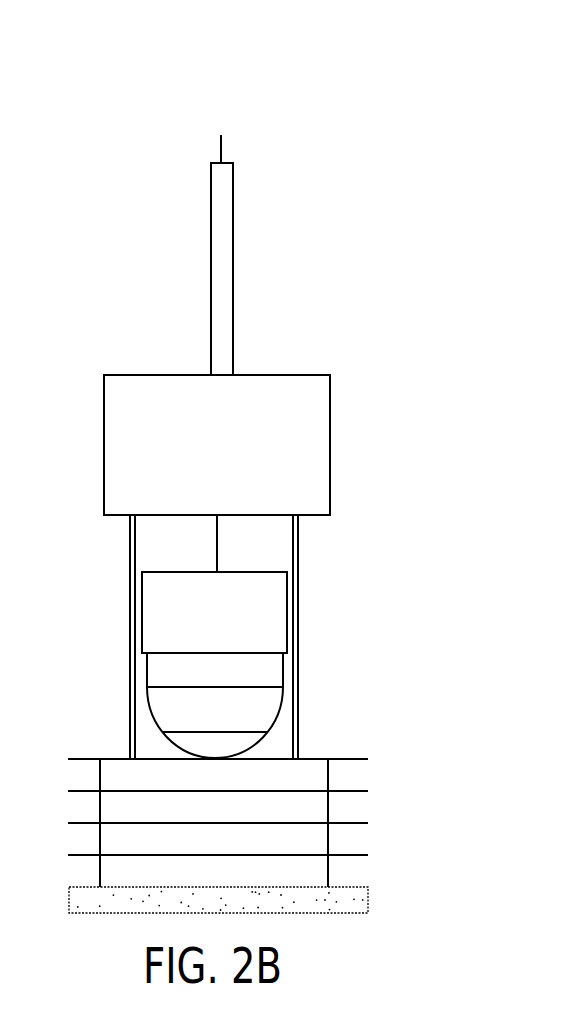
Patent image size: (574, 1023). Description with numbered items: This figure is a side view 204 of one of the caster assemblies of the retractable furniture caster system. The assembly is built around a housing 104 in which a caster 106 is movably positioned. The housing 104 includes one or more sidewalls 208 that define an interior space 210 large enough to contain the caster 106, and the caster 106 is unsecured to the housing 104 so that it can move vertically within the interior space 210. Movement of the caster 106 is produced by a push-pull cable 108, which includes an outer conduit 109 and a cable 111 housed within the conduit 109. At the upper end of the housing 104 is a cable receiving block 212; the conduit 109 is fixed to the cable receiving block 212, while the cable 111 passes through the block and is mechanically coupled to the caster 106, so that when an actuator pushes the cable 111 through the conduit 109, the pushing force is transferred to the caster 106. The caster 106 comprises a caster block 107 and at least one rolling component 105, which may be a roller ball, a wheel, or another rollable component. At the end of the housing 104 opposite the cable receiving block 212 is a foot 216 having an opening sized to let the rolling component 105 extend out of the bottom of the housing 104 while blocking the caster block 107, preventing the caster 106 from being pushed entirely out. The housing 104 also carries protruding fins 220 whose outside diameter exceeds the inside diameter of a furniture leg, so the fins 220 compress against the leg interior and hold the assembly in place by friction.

The side view 204 is at (222, 60).
The outer conduit 109 is at (211, 243).
The push-pull cable 108 is at (245, 282).
The housing 104 is at (350, 454).
The cable receiving block 212 is at (104, 424).
The cable 111 is at (219, 535).
The interior space 210 is at (192, 553).
The sidewalls 208 is at (130, 592).
The caster 106 is at (302, 605).
The caster block 107 is at (142, 645).
The rolling component 105 is at (165, 745).
The protruding fins 220 is at (357, 759).
The foot 216 is at (69, 900).